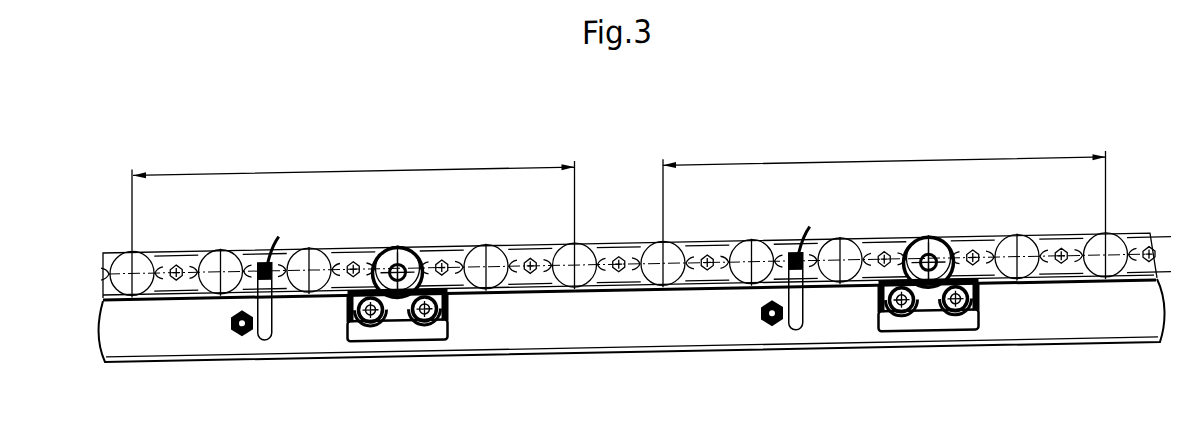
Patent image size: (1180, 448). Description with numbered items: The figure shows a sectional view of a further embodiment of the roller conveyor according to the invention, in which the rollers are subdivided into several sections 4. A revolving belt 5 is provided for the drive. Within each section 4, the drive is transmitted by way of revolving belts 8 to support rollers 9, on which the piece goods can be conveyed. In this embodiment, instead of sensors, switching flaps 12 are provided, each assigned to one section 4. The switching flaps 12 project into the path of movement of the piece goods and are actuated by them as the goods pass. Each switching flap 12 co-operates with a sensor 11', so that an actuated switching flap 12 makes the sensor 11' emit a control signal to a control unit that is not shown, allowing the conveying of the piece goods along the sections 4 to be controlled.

The section 4 is at (357, 255).
The revolving belt 5 is at (625, 303).
The revolving belts 8 is at (535, 293).
The support rollers 9 is at (492, 282).
The sensor 11' is at (493, 368).
The switching flap 12 is at (262, 266).